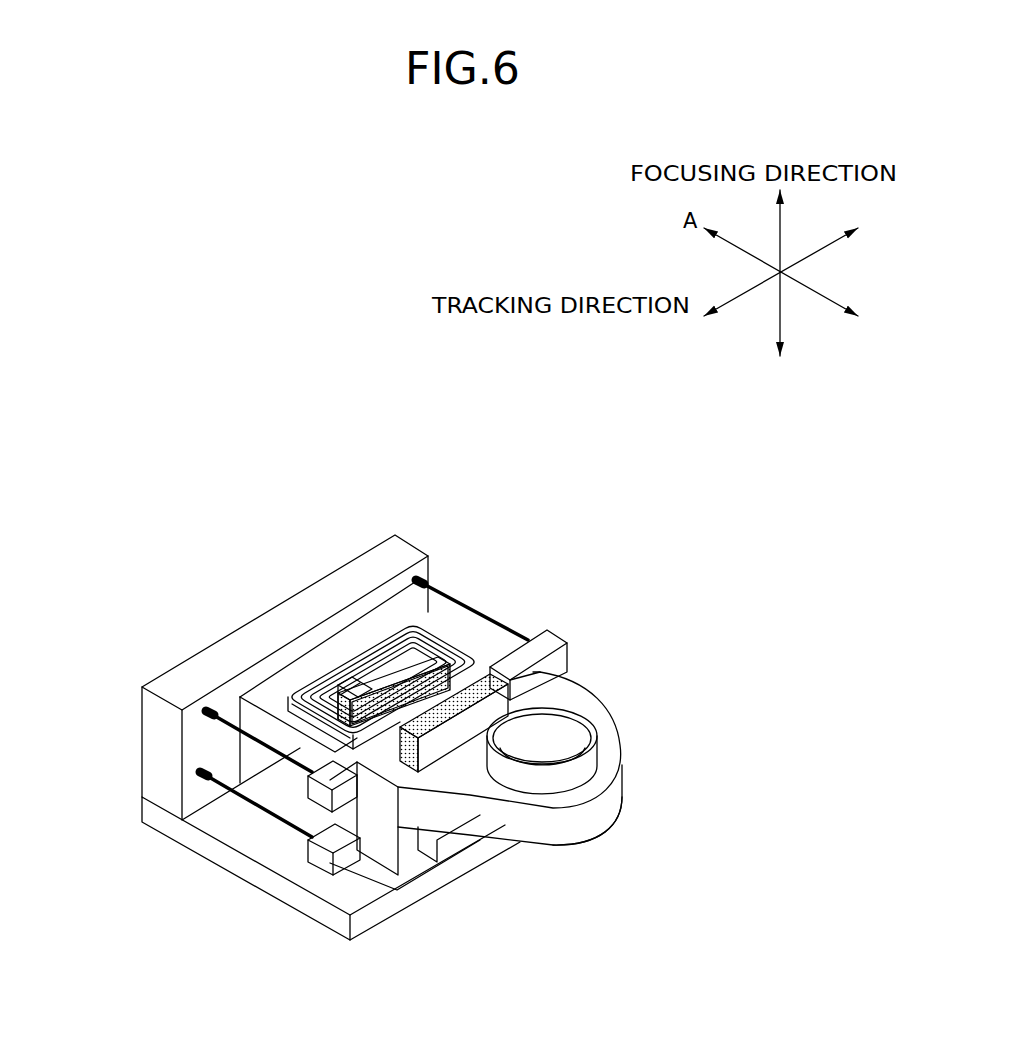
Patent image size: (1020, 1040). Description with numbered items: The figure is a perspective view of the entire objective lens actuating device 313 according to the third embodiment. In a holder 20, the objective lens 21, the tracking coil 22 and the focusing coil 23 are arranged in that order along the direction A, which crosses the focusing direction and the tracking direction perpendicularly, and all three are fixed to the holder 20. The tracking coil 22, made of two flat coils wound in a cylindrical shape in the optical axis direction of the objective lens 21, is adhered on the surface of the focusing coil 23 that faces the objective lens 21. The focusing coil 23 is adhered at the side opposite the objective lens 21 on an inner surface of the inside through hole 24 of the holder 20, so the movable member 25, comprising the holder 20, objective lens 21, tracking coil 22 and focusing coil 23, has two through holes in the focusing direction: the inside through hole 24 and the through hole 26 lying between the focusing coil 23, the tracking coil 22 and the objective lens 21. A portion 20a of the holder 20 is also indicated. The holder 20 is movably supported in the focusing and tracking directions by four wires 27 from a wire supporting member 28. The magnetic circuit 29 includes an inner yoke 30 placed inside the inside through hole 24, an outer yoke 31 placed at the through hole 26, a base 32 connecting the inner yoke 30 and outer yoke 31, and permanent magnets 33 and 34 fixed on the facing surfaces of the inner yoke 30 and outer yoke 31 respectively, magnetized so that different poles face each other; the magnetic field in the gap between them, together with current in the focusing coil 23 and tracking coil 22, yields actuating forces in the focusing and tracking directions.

The objective lens actuating device 313 is at (249, 429).
The holder 20 is at (604, 768).
The holder portion 20a is at (572, 830).
The objective lens 21 is at (572, 735).
The tracking coil 22 is at (384, 753).
The focusing coil 23 is at (406, 645).
The inside through hole 24 is at (432, 667).
The movable member 25 is at (590, 636).
The through hole 26 is at (535, 700).
The wires 27 is at (450, 598).
The wire supporting member 28 is at (337, 590).
The magnetic circuit 29 is at (300, 742).
The inner yoke 30 is at (370, 678).
The outer yoke 31 is at (450, 735).
The base 32 is at (341, 884).
The permanent magnet 33 is at (480, 692).
The permanent magnet 34 is at (503, 652).